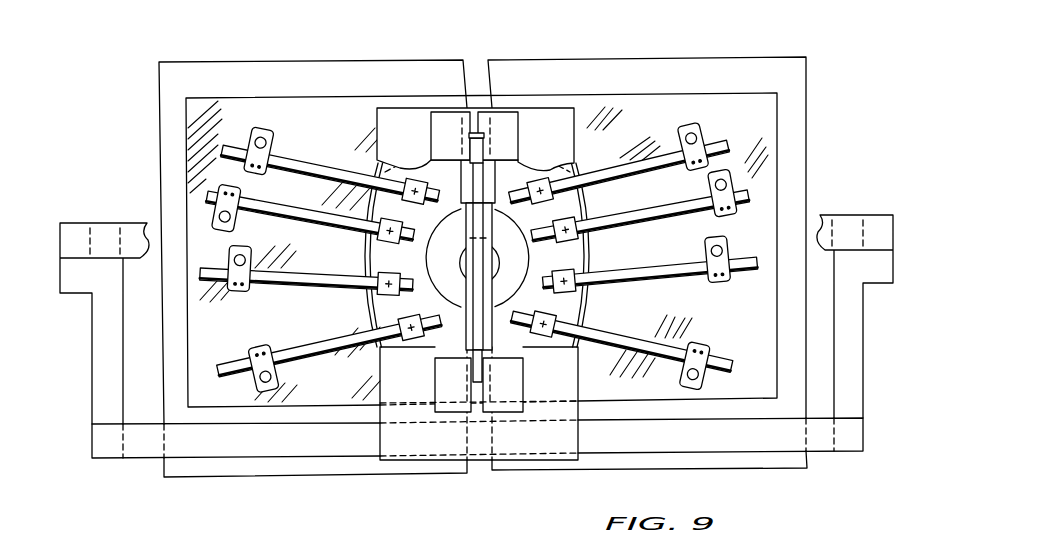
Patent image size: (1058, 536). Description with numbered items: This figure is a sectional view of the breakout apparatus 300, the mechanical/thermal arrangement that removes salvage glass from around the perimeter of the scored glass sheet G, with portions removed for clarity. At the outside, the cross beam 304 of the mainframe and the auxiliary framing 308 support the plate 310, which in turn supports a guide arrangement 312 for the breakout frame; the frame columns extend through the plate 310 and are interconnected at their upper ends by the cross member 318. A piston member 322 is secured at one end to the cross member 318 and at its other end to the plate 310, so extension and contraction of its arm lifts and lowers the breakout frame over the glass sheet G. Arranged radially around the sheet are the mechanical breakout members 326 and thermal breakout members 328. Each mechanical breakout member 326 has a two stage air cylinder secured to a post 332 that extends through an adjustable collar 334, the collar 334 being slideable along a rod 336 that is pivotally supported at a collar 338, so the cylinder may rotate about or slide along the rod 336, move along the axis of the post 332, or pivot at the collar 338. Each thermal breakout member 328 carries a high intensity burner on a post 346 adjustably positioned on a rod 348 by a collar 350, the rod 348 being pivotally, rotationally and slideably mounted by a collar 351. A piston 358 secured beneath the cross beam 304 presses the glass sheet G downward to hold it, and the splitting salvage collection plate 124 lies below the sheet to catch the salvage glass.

The splitting salvage collection plate 124 is at (690, 57).
The breakout apparatus 300 is at (835, 86).
The glass sheet G is at (777, 118).
The cross beam 304 is at (822, 214).
The auxiliary framing 308 is at (818, 453).
The plate 310 is at (579, 428).
The guide arrangement 312 is at (463, 150).
The cross member 318 is at (462, 294).
The piston member 322 is at (529, 256).
The mechanical breakout member 326 is at (265, 130).
The thermal breakout member 328 is at (238, 227).
The post 332 is at (710, 373).
The adjustable collar 334 is at (703, 345).
The rod 336 is at (635, 330).
The collar 338 is at (578, 298).
The post 346 is at (252, 382).
The rod 348 is at (317, 342).
The collar 350 is at (255, 350).
The collar 351 is at (413, 340).
The piston 358 is at (372, 248).